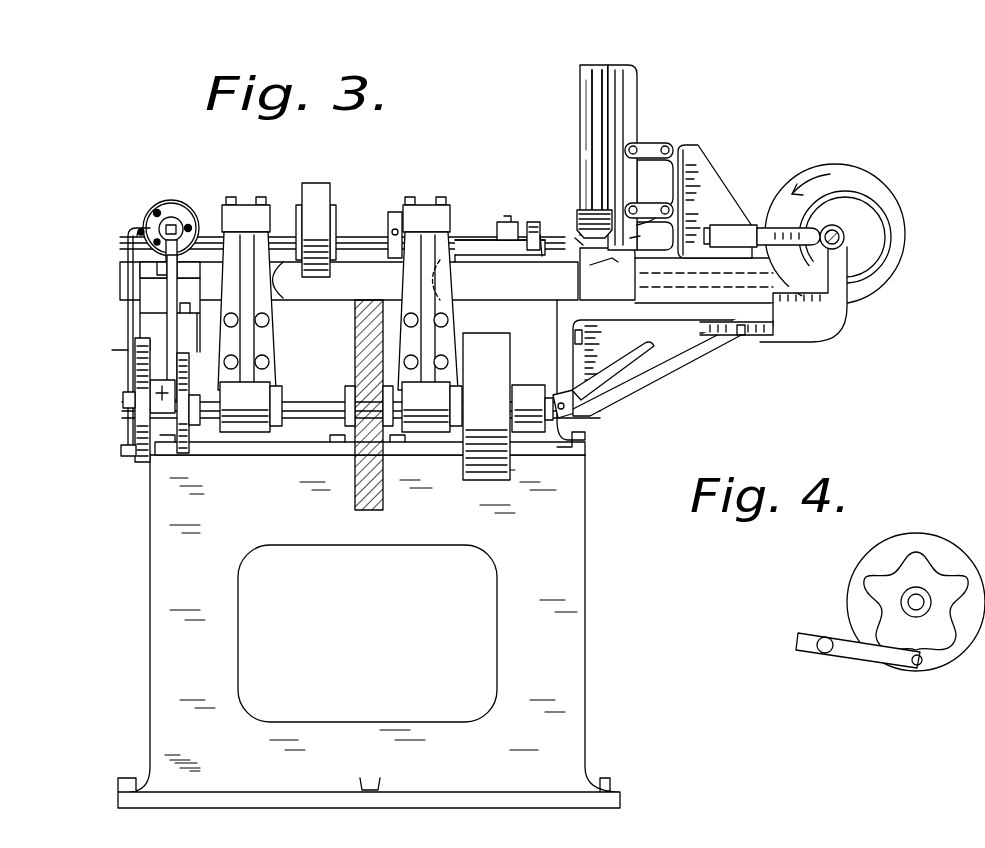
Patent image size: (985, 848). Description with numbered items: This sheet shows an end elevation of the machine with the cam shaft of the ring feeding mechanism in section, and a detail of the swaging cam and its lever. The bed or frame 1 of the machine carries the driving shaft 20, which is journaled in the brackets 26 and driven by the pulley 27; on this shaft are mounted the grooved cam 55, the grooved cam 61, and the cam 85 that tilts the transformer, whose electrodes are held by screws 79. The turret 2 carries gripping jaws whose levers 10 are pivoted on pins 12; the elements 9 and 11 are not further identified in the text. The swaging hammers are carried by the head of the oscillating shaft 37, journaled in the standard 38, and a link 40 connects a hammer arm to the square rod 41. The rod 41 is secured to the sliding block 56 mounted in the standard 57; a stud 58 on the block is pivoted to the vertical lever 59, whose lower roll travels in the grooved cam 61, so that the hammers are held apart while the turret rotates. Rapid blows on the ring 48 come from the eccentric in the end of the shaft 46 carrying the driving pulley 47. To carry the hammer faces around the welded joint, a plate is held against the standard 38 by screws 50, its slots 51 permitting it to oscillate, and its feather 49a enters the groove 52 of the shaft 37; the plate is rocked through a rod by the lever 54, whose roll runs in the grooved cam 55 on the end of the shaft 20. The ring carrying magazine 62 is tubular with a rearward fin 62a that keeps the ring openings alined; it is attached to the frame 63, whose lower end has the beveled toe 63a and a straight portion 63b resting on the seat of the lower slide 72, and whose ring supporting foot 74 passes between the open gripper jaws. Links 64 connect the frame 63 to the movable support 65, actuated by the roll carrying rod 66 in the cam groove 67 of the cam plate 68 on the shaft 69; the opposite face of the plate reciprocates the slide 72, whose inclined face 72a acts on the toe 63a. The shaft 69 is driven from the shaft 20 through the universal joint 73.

In FIG. 3, the frame 1 is at (349, 297).
In FIG. 3, the turret 2 is at (535, 258).
In FIG. 3, the stop 9 is at (530, 224).
In FIG. 3, the lever 10 is at (500, 242).
In FIG. 3, the pin 11 is at (541, 252).
In FIG. 3, the pin 12 is at (507, 218).
In FIG. 3, the driving shaft 20 is at (340, 405).
In FIG. 4, the driving shaft 20 is at (924, 600).
In FIG. 3, the bracket 26 is at (440, 197).
In FIG. 3, the pulley 27 is at (486, 406).
In FIG. 3, the oscillating shaft 37 is at (128, 242).
In FIG. 3, the standard 38 is at (177, 218).
In FIG. 3, the link 40 is at (170, 216).
In FIG. 3, the square rod 41 is at (135, 232).
In FIG. 3, the shaft 46 is at (378, 236).
In FIG. 3, the driving pulley 47 is at (328, 192).
In FIG. 3, the ring 48 is at (578, 218).
In FIG. 3, the feather 49a is at (178, 226).
In FIG. 3, the screw 50 is at (154, 212).
In FIG. 3, the slot 51 is at (141, 229).
In FIG. 3, the groove 52 is at (128, 352).
In FIG. 4, the lever 54 is at (798, 642).
In FIG. 3, the grooved cam 55 is at (138, 460).
In FIG. 3, the sliding block 56 is at (145, 270).
In FIG. 3, the standard 57 is at (150, 292).
In FIG. 3, the stud 58 is at (165, 283).
In FIG. 3, the vertical lever 59 is at (178, 345).
In FIG. 3, the grooved cam 61 is at (192, 447).
In FIG. 3, the ring carrying magazine 62 is at (582, 93).
In FIG. 3, the fin 62a is at (610, 66).
In FIG. 3, the frame 63 is at (637, 120).
In FIG. 3, the beveled toe 63a is at (650, 222).
In FIG. 3, the lug 63b is at (634, 241).
In FIG. 3, the link 64 is at (662, 145).
In FIG. 3, the movable support 65 is at (717, 180).
In FIG. 3, the roll carrying rod 66 is at (780, 228).
In FIG. 3, the cam groove 67 is at (878, 205).
In FIG. 3, the cam plate 68 is at (818, 168).
In FIG. 3, the shaft 69 is at (841, 232).
In FIG. 3, the lower slide 72 is at (676, 275).
In FIG. 3, the inclined face 72a is at (605, 260).
In FIG. 3, the universal joint 73 is at (638, 352).
In FIG. 3, the ring supporting foot 74 is at (578, 241).
In FIG. 3, the screws 79 is at (356, 356).
In FIG. 3, the cam 85 is at (527, 385).